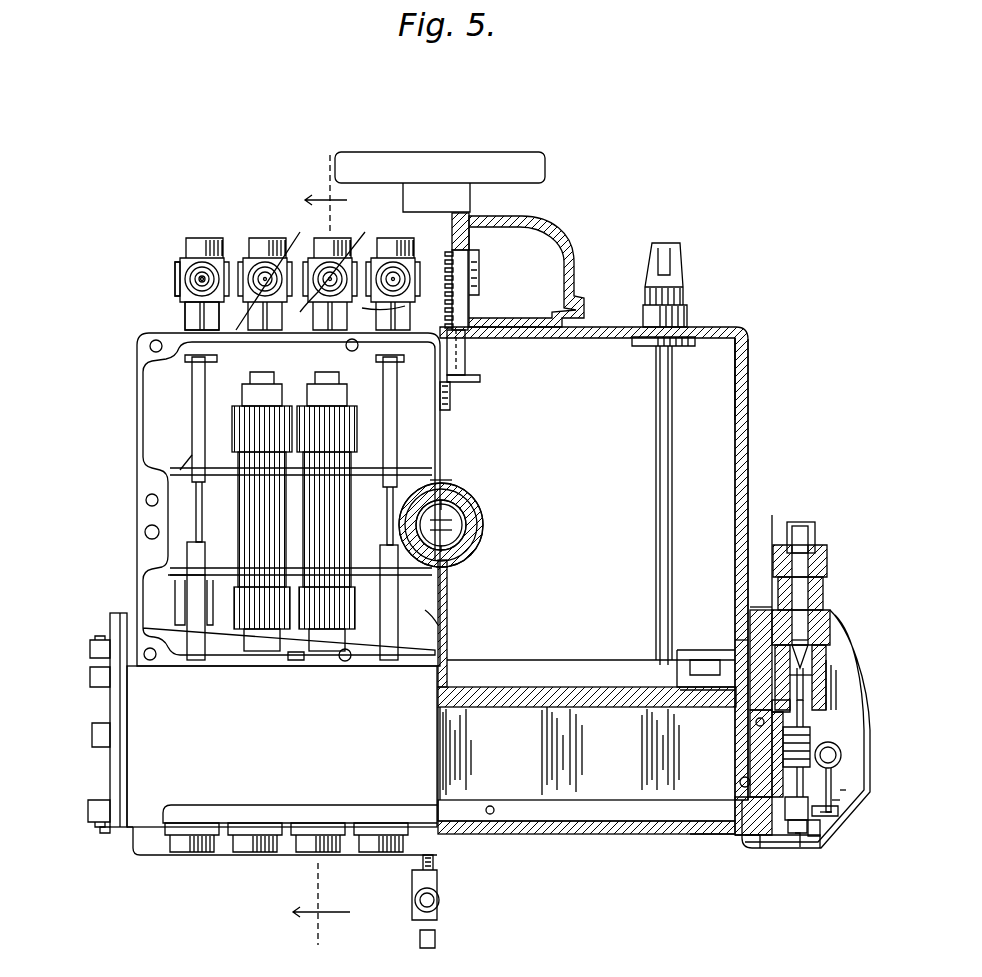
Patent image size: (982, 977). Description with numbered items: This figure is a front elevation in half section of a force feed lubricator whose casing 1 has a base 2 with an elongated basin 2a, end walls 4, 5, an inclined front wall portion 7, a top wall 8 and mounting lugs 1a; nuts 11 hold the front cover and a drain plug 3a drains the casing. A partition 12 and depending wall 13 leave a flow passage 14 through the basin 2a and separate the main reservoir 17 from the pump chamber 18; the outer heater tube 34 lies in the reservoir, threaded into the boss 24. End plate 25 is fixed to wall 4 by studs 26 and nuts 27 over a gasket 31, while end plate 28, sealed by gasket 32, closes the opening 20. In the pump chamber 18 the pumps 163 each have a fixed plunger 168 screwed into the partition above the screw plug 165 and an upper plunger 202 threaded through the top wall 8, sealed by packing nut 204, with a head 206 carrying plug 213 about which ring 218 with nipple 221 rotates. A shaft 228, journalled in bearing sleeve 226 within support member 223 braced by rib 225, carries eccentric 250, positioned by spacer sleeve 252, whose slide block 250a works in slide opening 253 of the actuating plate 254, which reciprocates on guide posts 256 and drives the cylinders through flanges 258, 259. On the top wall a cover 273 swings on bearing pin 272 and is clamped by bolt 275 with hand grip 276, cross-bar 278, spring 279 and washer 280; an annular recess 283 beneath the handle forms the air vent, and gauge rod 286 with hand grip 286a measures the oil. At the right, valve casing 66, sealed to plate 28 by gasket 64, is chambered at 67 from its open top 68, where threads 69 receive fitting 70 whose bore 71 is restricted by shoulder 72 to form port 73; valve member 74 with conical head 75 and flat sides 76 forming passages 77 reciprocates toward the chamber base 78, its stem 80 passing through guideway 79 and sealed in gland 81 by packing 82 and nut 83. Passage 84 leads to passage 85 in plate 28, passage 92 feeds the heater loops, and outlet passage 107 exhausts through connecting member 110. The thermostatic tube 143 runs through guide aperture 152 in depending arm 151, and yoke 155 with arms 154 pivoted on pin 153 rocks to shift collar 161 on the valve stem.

The hand grip 276 is at (527, 168).
The annular recess 283 is at (470, 222).
The cover 273 is at (575, 246).
The coil spring 279 is at (468, 274).
The top wall 8 is at (612, 326).
The side or end wall 5 is at (752, 415).
The casing 1 is at (727, 326).
The main reservoir 17 is at (735, 378).
The hand grip 286a is at (670, 252).
The gauge rod 286 is at (658, 410).
The partition 12 is at (522, 705).
The wall 13 is at (513, 764).
The base or bottom wall 2 is at (540, 823).
The basin 2a is at (490, 815).
The flow passage 14 is at (594, 822).
The reinforcing rib 225 is at (450, 606).
The outer tube 34 is at (615, 668).
The passage 77 is at (680, 690).
The outlet passage 107 is at (692, 836).
The eccentric 250 is at (445, 556).
The eccentric slide block 250a is at (442, 480).
The shaft 228 is at (452, 510).
The bearing sleeve 226 is at (456, 524).
The spacer sleeve 252 is at (442, 540).
The bearing support member 223 is at (456, 546).
The slide opening 253 is at (447, 575).
The pump-actuating member 254 is at (186, 490).
The cross-bar 278 is at (457, 356).
The washer 280 is at (472, 380).
The bolt 275 is at (452, 402).
The side or end wall 4 is at (137, 430).
The pump chamber 18 is at (172, 386).
The pump plunger 202 is at (392, 418).
The fixed pump plunger 168 is at (392, 640).
The flange 258 is at (183, 470).
The flange 259 is at (180, 576).
The guide posts 256 is at (292, 658).
The packing nut 204 is at (332, 394).
The pumps 163 is at (345, 640).
The plug 213 is at (192, 248).
The hollow nipple 221 is at (192, 280).
The ring 218 is at (176, 290).
The head 206 is at (186, 312).
The bearing pin 272 is at (303, 226).
The nuts 11 is at (333, 550).
The inclined portion of front wall 7 is at (282, 746).
The end plate 25 is at (116, 770).
The lugs 1a is at (150, 850).
The screw plug 165 is at (322, 852).
The studs 26 is at (96, 822).
The nuts 27 is at (106, 832).
The gasket 31 is at (130, 832).
The drain plug 3a is at (412, 893).
The flange or boss 24 is at (690, 655).
The gasket 64 is at (740, 640).
The valve head 75 is at (762, 630).
The internal threads 69 is at (770, 600).
The bore 71 is at (816, 568).
The connecting fitting 70 is at (802, 585).
The top 68 is at (815, 600).
The valve port 73 is at (806, 622).
The annular shoulder 72 is at (810, 642).
The chamber 67 is at (808, 656).
The valve casing 66 is at (818, 668).
The valve member 74 is at (828, 678).
The flat side 76 is at (834, 690).
The lower end 78 is at (836, 706).
The guideway 79 is at (850, 710).
The longitudinal passage 85 is at (745, 712).
The passage 84 is at (750, 722).
The longitudinal passage 92 is at (760, 735).
The valve stem 80 is at (752, 752).
The sleeve 81 is at (742, 768).
The opening 20 is at (735, 794).
The packing 82 is at (807, 762).
The packing nut 83 is at (820, 777).
The guide aperture 152 is at (842, 782).
The connecting member 110 is at (766, 842).
The collar 161 is at (785, 840).
The yoke 155 is at (806, 842).
The arms 154 is at (812, 840).
The pin 153 is at (830, 835).
The arm 151 is at (838, 825).
The tube 143 is at (842, 818).
The gasket 32 is at (738, 850).
The end plate 28 is at (756, 850).